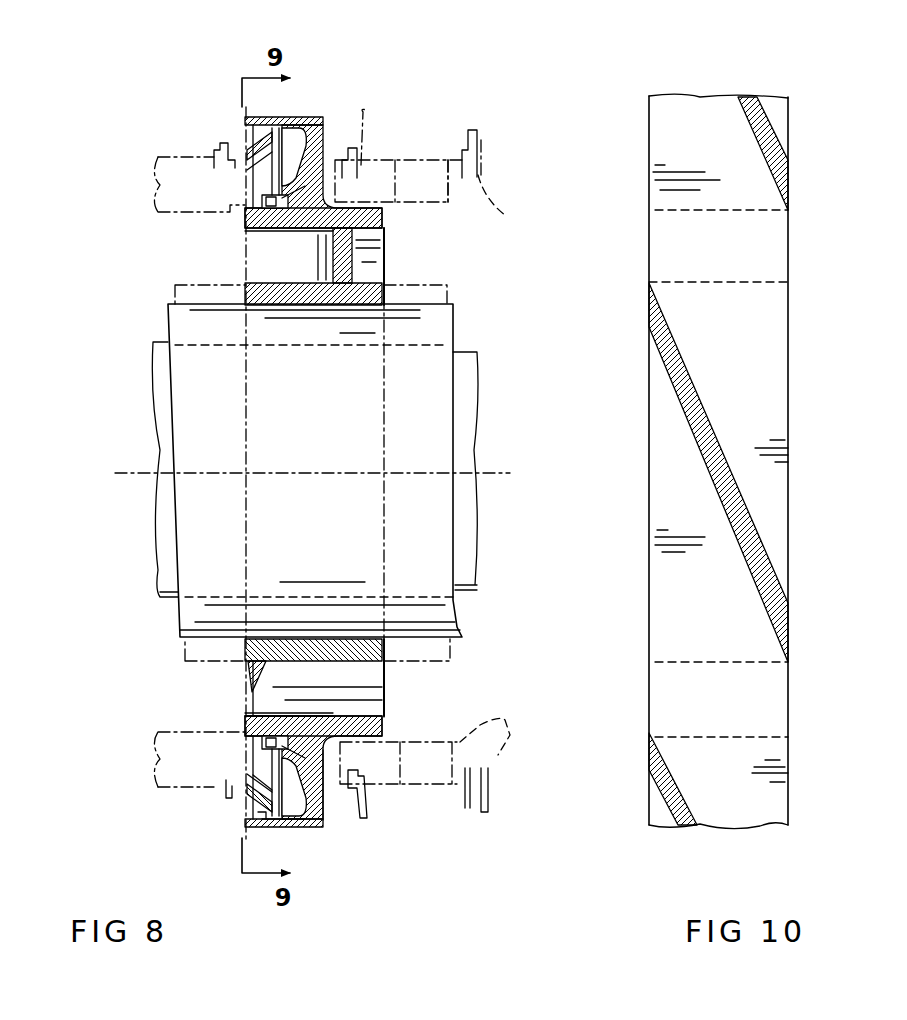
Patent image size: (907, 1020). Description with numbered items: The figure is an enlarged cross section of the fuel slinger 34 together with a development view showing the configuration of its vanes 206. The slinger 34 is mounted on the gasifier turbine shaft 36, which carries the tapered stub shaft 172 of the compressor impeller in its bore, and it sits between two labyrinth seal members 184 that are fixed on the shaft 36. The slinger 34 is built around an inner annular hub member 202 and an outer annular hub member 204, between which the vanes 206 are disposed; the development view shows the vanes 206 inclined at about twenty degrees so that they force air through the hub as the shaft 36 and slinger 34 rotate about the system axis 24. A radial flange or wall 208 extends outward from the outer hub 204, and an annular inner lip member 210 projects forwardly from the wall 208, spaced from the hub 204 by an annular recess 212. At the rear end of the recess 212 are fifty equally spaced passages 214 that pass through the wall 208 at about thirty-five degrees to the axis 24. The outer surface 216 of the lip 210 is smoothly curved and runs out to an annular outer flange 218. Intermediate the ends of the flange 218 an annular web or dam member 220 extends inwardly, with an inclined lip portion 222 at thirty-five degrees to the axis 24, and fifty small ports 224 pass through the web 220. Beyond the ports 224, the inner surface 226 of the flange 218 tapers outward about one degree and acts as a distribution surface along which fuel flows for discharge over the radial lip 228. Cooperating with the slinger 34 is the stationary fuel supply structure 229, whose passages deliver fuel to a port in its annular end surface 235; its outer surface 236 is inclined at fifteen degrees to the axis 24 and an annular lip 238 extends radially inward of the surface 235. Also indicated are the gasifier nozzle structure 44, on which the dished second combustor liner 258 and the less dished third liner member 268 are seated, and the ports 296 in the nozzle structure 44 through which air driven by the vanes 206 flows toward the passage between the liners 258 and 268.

In FIG. 8, the system axis 24 is at (158, 475).
In FIG. 8, the fuel slinger 34 is at (323, 112).
In FIG. 10, the fuel slinger 34 is at (790, 122).
In FIG. 8, the gasifier turbine shaft 36 is at (457, 396).
In FIG. 8, the gasifier nozzle structure 44 is at (489, 192).
In FIG. 8, the stub shaft 172 is at (463, 352).
In FIG. 8, the labyrinth seal member 184 is at (176, 285).
In FIG. 8, the inner annular hub member 202 is at (258, 286).
In FIG. 10, the inner annular hub member 202 is at (782, 316).
In FIG. 8, the outer annular hub member 204 is at (386, 219).
In FIG. 8, the vanes 206 is at (345, 261).
In FIG. 10, the vanes 206 is at (712, 423).
In FIG. 8, the radial flange or wall 208 is at (330, 808).
In FIG. 8, the annular inner lip member 210 is at (276, 186).
In FIG. 8, the annular recess 212 is at (268, 734).
In FIG. 8, the passages 214 is at (305, 196).
In FIG. 8, the outer surface of lip 216 is at (282, 761).
In FIG. 8, the annular outer flange 218 is at (277, 828).
In FIG. 8, the annular web or dam member 220 is at (245, 815).
In FIG. 8, the inclined lip portion 222 is at (252, 152).
In FIG. 8, the ports 224 is at (284, 128).
In FIG. 8, the inner surface of annular flange 226 is at (252, 818).
In FIG. 8, the radial lip 228 is at (262, 140).
In FIG. 8, the stationary fuel supply structure 229 is at (153, 204).
In FIG. 8, the annular end surface 235 is at (262, 165).
In FIG. 8, the outer surface 236 is at (220, 146).
In FIG. 8, the annular lip 238 is at (276, 208).
In FIG. 8, the second combustor liner 258 is at (366, 115).
In FIG. 8, the third liner member 268 is at (482, 140).
In FIG. 8, the ports 296 is at (447, 180).